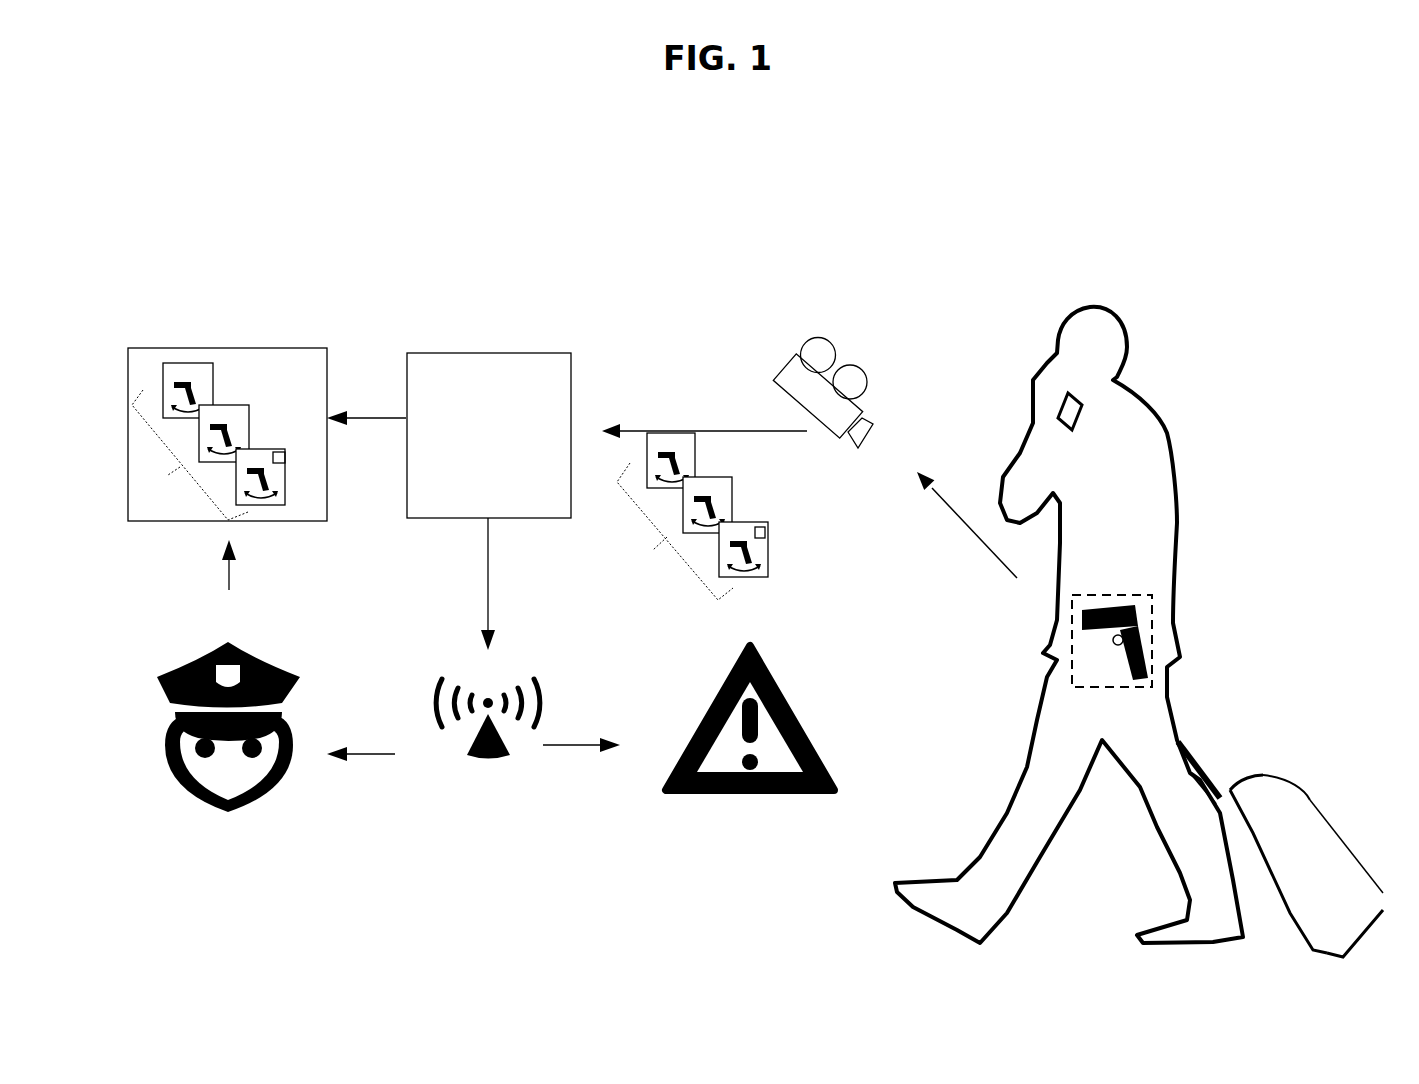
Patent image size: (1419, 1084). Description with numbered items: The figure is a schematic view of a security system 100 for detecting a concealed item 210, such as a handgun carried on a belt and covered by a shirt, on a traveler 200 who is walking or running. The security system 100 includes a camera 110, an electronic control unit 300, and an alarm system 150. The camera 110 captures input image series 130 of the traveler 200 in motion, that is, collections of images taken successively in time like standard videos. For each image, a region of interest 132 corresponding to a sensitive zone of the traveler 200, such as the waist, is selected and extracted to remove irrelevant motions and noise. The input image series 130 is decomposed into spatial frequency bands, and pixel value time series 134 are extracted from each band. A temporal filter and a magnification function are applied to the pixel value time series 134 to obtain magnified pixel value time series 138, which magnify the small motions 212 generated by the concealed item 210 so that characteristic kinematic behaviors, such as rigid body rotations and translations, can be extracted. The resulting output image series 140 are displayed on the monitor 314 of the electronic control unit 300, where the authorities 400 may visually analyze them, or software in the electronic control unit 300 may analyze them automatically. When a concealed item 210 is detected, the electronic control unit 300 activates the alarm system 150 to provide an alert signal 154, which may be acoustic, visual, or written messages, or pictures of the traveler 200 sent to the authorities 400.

The security system 100 is at (562, 203).
The camera 110 is at (788, 362).
The input image series 130 is at (733, 516).
The pixel value time series 134 is at (767, 523).
The small motions 212 is at (753, 567).
The electronic control unit 300 is at (490, 351).
The monitor 314 is at (273, 439).
The output image series 140 is at (275, 467).
The magnified pixel value time series 138 is at (286, 463).
The alarm system 150 is at (483, 762).
The alert signal 154 is at (778, 678).
The authorities 400 is at (192, 820).
The traveler 200 is at (1139, 632).
The region of interest 132 is at (1181, 610).
The concealed item 210 is at (1145, 660).